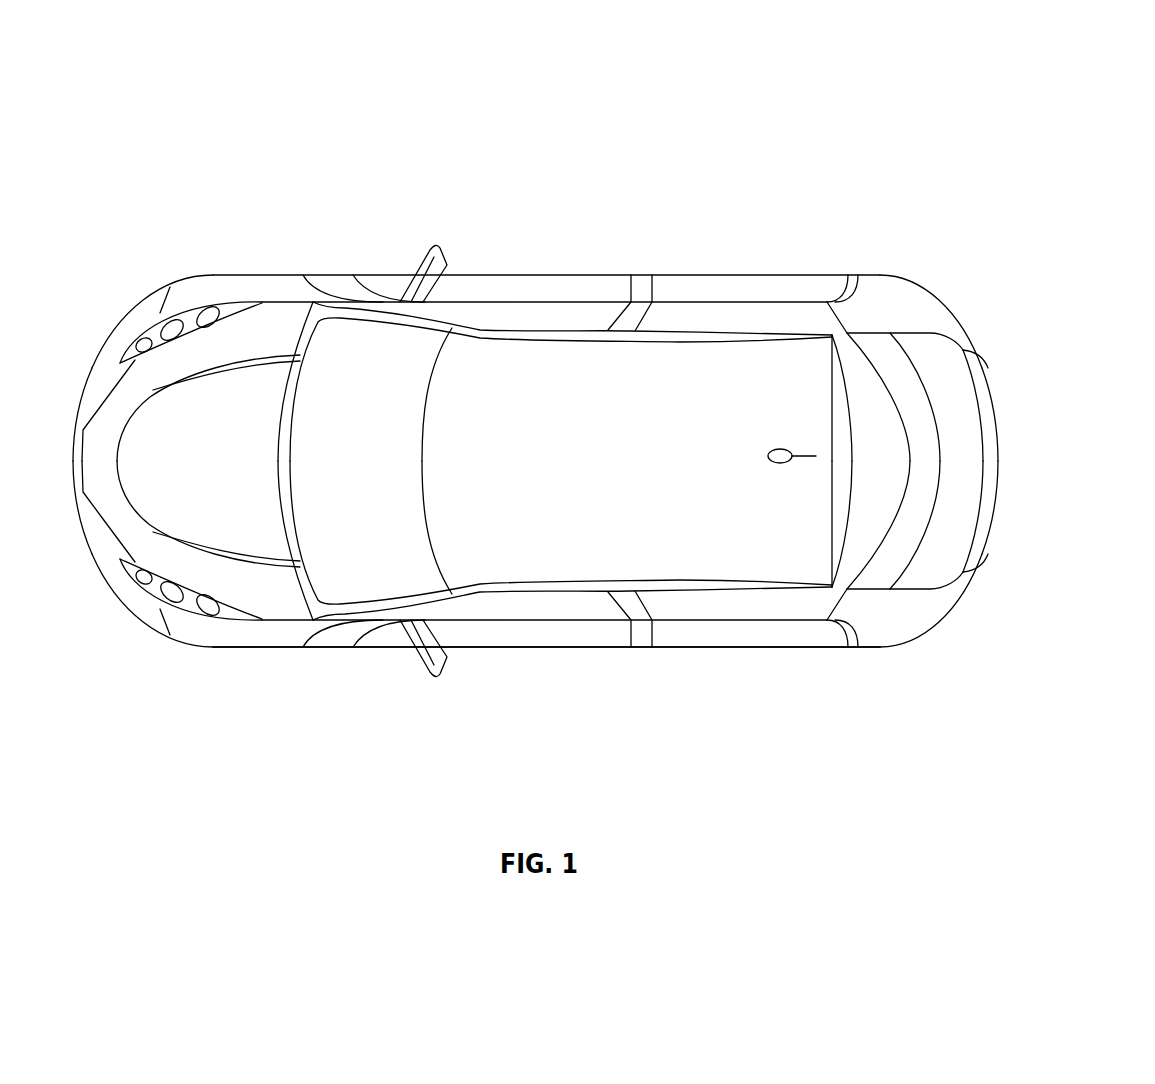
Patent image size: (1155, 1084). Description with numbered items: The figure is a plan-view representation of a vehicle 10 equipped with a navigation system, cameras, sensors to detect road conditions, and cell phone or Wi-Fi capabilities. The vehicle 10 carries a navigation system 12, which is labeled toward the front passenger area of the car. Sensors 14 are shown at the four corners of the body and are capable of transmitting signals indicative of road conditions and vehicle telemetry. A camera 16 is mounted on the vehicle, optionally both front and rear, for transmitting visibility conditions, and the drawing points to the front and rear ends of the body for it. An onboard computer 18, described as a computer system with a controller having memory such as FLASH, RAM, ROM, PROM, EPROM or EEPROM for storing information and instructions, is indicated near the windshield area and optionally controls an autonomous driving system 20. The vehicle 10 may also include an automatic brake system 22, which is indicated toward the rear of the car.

The vehicle 10 is at (538, 471).
The navigation system 12 is at (318, 457).
The sensors 14 is at (103, 351).
The camera 16 is at (74, 468).
The onboard computer 18 is at (338, 443).
The autonomous driving system 20 is at (373, 437).
The automatic brake system 22 is at (813, 647).